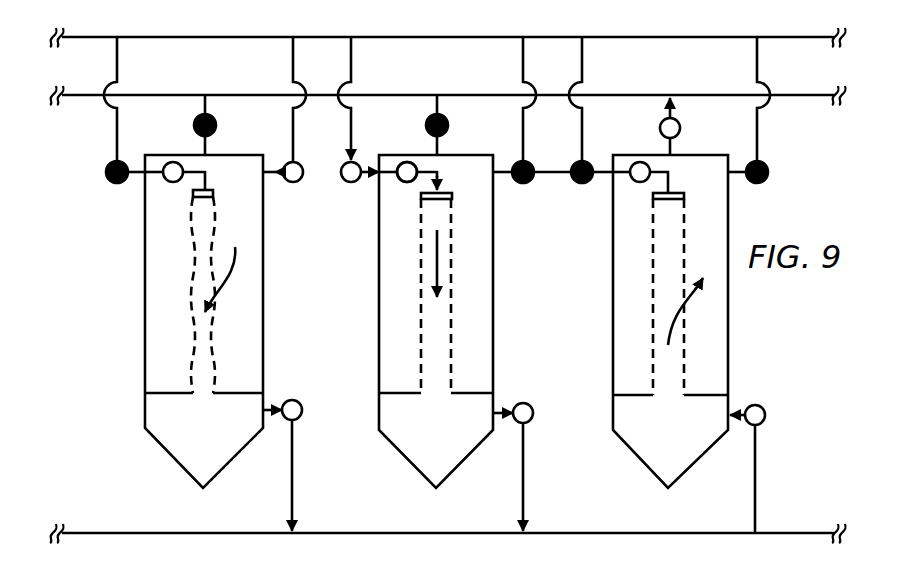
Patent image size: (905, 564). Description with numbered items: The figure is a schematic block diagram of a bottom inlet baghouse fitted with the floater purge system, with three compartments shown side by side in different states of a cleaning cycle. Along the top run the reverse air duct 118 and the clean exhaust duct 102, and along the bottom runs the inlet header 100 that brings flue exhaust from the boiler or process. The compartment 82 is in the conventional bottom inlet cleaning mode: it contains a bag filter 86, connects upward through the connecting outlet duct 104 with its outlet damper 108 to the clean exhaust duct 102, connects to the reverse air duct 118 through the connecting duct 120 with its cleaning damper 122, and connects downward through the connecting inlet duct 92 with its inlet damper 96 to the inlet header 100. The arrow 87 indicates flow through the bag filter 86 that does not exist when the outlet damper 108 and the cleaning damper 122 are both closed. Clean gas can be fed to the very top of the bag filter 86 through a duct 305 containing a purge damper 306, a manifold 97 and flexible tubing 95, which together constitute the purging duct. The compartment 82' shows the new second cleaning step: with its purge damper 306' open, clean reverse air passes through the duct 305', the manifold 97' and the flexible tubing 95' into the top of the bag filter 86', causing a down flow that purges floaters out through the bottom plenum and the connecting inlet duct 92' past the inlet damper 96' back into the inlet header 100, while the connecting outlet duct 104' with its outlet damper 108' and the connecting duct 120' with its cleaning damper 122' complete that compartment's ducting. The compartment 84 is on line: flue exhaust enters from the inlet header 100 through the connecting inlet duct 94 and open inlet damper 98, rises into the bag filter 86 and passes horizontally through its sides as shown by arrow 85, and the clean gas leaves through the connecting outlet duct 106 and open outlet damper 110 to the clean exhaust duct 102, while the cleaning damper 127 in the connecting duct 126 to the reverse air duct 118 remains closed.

The reverse air duct 118 is at (392, 37).
The clean exhaust duct 102 is at (380, 95).
The inlet header 100 is at (345, 533).
The outlet damper 108 is at (234, 115).
The connecting outlet duct 104 is at (239, 142).
The manifold 97 is at (391, 154).
The flexible tubing 95 is at (451, 180).
The connecting duct 120 is at (320, 99).
The purge damper 306 is at (317, 126).
The duct 305 is at (330, 220).
The bag filter 86 is at (373, 296).
The compartment 82 is at (160, 321).
The arrow 87 is at (233, 268).
The cleaning damper 122 is at (296, 201).
The inlet damper 96 is at (297, 397).
The connecting inlet duct 92 is at (315, 475).
The purge damper 306' is at (334, 125).
The duct 305' is at (348, 212).
The compartment 82' is at (399, 321).
The manifold 97' is at (391, 154).
The flexible tubing 95' is at (455, 181).
The outlet damper 108' is at (468, 115).
The connecting outlet duct 104' is at (473, 142).
The bag filter 86' is at (384, 296).
The connecting duct 120' is at (540, 110).
The cleaning damper 122' is at (534, 213).
The inlet damper 96' is at (531, 399).
The connecting inlet duct 92' is at (548, 477).
The compartment 84 is at (613, 357).
The arrow 85 is at (690, 305).
The connecting outlet duct 106 is at (672, 150).
The outlet damper 110 is at (680, 128).
The connecting duct 126 is at (759, 149).
The cleaning damper 127 is at (767, 178).
The inlet damper 98 is at (765, 409).
The connecting inlet duct 94 is at (757, 480).